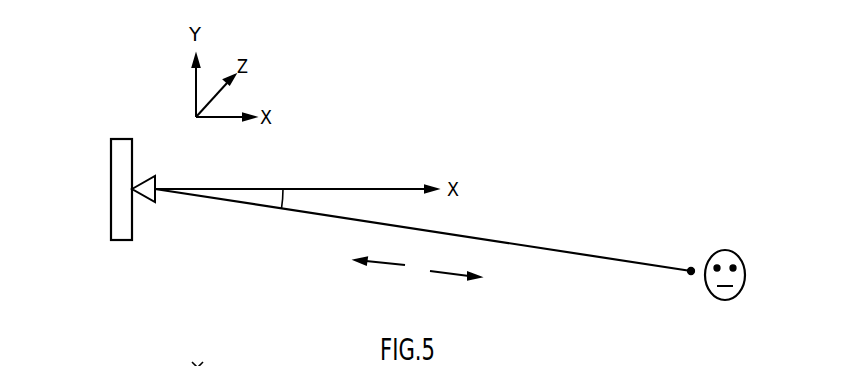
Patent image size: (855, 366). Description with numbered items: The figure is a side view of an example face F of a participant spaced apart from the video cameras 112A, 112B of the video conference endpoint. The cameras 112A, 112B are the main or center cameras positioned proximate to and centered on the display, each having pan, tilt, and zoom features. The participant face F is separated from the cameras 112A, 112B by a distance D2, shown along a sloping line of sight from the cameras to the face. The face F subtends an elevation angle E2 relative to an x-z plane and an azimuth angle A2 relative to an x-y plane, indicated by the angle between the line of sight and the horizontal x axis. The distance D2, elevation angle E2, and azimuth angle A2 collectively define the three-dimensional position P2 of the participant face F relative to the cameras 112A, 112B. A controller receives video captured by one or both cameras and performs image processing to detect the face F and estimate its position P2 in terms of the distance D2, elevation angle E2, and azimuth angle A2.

The video camera 112A is at (95, 173).
The video camera 112B is at (111, 157).
The 3-D position P2 is at (451, 262).
The azimuth angle A2 is at (335, 201).
The elevation angle E2 is at (287, 197).
The distance D2 is at (420, 230).
The participant face F is at (725, 250).